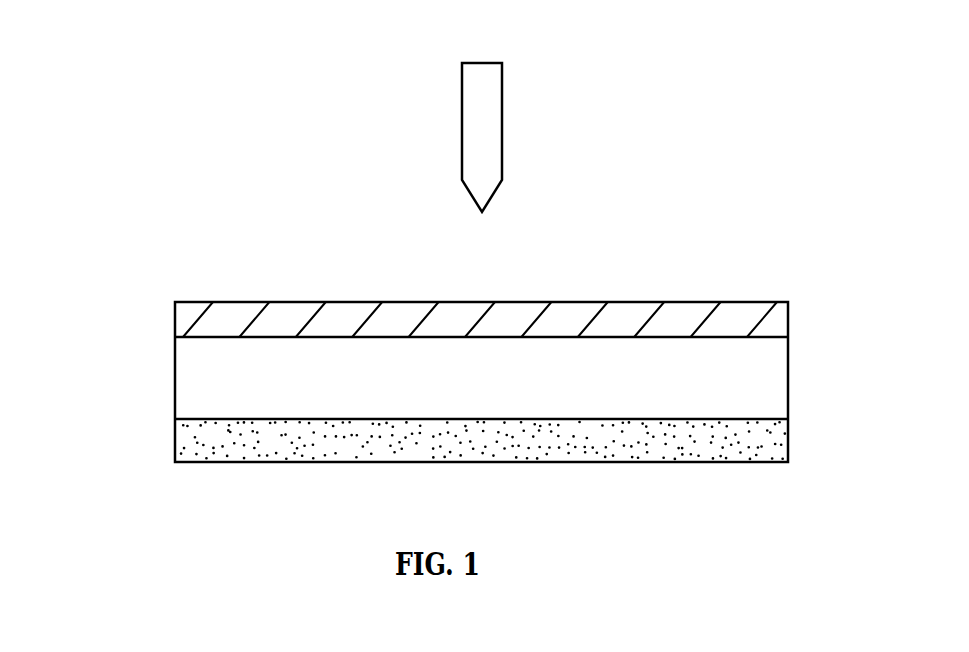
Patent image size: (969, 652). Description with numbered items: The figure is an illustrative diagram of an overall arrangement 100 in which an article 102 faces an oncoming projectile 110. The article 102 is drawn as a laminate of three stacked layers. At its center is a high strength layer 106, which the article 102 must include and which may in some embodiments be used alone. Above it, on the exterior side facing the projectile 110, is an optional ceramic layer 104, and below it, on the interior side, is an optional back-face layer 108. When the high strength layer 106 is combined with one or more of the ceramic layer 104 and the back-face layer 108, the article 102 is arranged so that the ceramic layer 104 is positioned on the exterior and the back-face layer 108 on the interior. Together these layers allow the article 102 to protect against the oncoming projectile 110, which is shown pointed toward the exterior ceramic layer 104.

The scribing system 100 is at (165, 165).
The article 102 is at (131, 383).
The ceramic layer 104 is at (773, 322).
The high strength layer 106 is at (530, 396).
The back-face layer 108 is at (773, 440).
The oncoming projectile 110 is at (502, 117).